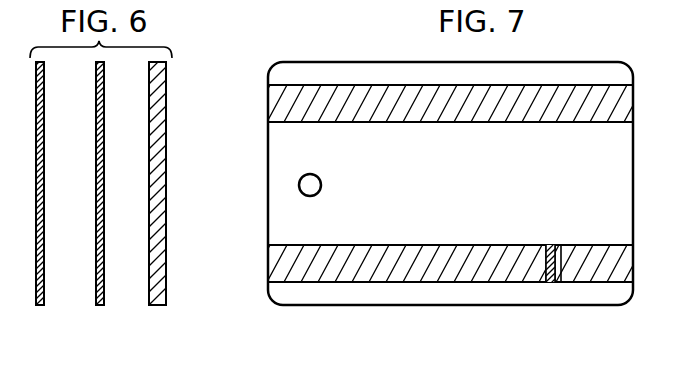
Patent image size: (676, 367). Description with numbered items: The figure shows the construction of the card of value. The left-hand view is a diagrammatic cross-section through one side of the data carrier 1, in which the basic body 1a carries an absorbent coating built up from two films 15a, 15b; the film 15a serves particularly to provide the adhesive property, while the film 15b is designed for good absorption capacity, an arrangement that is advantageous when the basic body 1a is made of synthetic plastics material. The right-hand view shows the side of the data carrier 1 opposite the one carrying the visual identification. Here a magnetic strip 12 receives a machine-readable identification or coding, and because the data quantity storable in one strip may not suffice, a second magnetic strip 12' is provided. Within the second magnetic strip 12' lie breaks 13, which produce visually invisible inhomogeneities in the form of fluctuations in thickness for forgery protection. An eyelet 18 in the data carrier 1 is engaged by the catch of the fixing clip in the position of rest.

In FIG. 6, the film 15b is at (41, 305).
In FIG. 6, the film 15a is at (101, 305).
In FIG. 6, the basic body 1a is at (157, 300).
In FIG. 7, the data carrier 1 is at (365, 287).
In FIG. 7, the magnetic strip 12 is at (432, 103).
In FIG. 7, the second magnetic strip 12' is at (432, 263).
In FIG. 7, the eyelet 18 is at (299, 188).
In FIG. 7, the breaks 13 is at (546, 283).